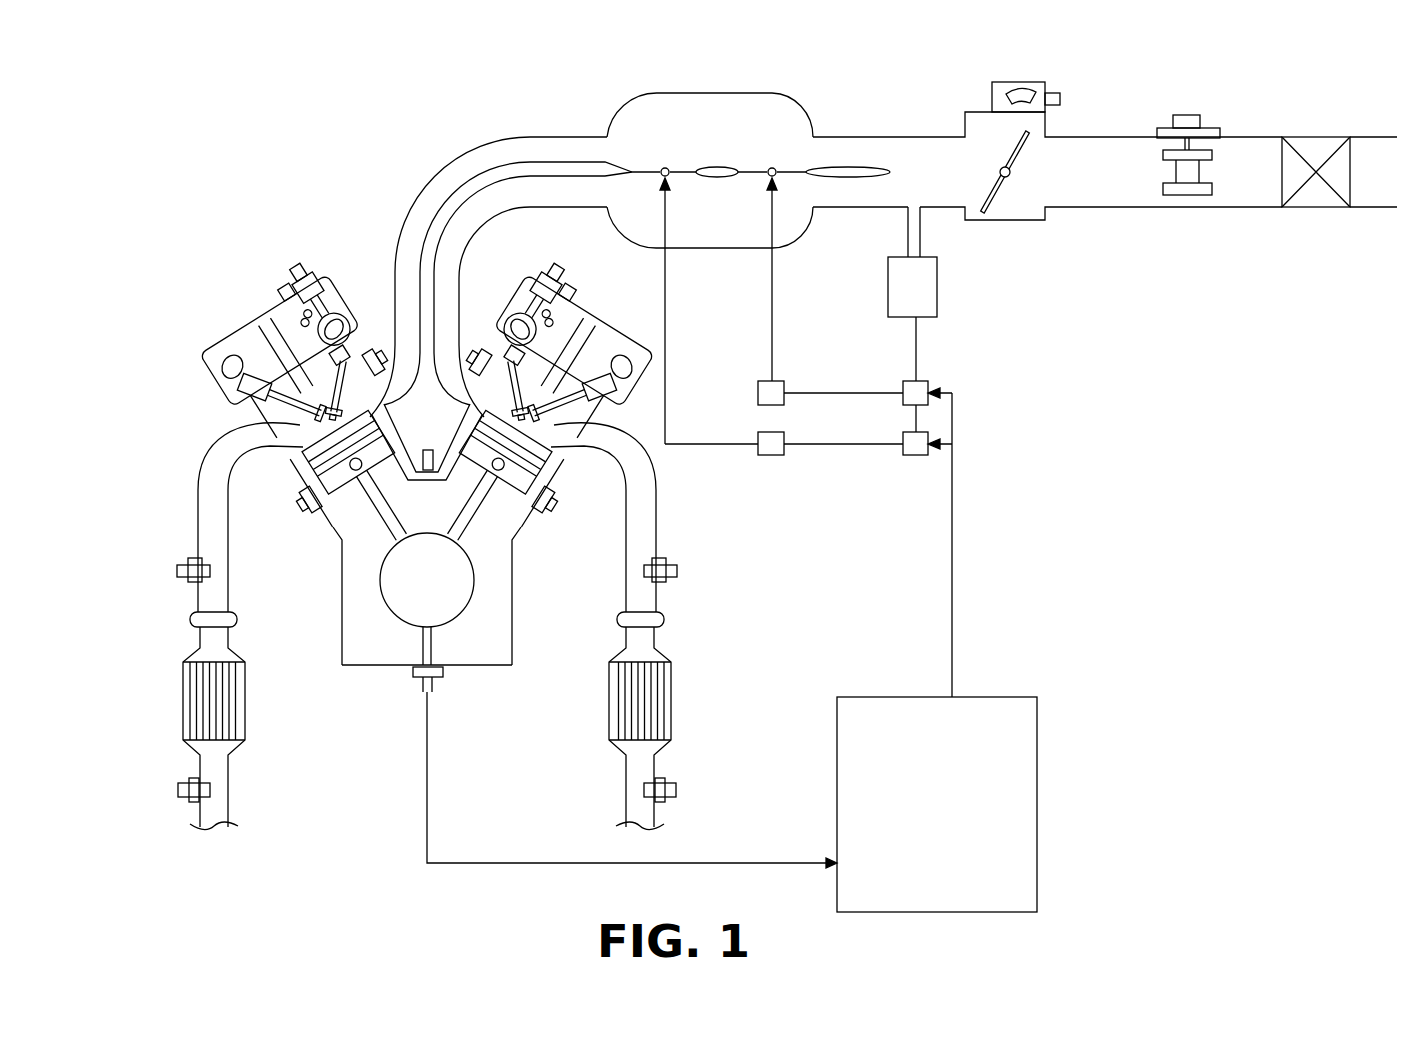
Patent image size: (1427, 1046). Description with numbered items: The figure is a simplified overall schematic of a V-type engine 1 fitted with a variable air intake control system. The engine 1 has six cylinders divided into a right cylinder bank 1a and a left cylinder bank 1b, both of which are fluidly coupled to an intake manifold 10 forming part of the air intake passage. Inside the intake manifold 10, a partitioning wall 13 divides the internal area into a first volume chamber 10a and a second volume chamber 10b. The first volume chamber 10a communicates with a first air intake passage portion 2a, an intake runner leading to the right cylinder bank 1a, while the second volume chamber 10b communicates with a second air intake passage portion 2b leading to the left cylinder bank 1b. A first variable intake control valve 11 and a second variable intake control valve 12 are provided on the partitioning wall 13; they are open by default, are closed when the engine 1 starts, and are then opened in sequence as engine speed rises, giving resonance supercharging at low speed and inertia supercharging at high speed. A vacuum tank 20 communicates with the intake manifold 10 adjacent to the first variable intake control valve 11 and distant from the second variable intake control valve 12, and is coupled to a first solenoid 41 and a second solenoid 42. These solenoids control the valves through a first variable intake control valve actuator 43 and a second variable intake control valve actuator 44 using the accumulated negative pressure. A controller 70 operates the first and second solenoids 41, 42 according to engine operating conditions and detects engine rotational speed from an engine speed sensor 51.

The engine 1 is at (218, 271).
The right cylinder bank 1a is at (607, 318).
The left cylinder bank 1b is at (335, 272).
The first air intake passage portion 2a is at (490, 215).
The second air intake passage portion 2b is at (450, 187).
The intake manifold 10 is at (788, 234).
The first volume chamber 10a is at (722, 232).
The second volume chamber 10b is at (752, 115).
The first variable intake control valve 11 is at (793, 168).
The second variable intake control valve 12 is at (678, 168).
The partitioning wall 13 is at (722, 163).
The vacuum tank 20 is at (937, 298).
The first solenoid 41 is at (903, 384).
The second solenoid 42 is at (905, 455).
The first variable intake control valve actuator 43 is at (758, 396).
The second variable intake control valve actuator 44 is at (766, 455).
The engine speed sensor 51 is at (412, 673).
The controller 70 is at (1037, 722).